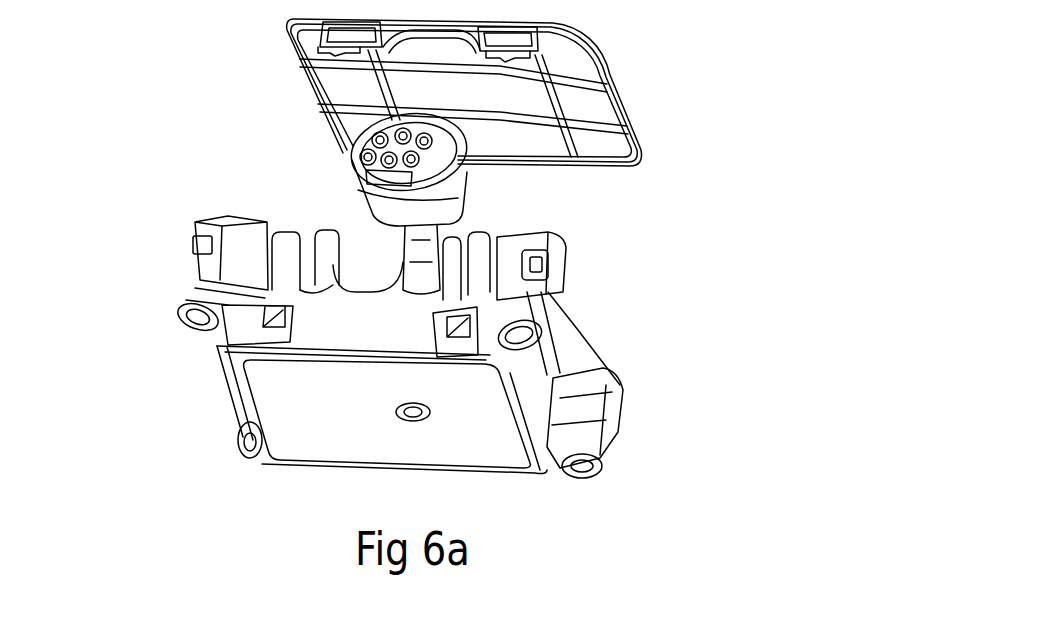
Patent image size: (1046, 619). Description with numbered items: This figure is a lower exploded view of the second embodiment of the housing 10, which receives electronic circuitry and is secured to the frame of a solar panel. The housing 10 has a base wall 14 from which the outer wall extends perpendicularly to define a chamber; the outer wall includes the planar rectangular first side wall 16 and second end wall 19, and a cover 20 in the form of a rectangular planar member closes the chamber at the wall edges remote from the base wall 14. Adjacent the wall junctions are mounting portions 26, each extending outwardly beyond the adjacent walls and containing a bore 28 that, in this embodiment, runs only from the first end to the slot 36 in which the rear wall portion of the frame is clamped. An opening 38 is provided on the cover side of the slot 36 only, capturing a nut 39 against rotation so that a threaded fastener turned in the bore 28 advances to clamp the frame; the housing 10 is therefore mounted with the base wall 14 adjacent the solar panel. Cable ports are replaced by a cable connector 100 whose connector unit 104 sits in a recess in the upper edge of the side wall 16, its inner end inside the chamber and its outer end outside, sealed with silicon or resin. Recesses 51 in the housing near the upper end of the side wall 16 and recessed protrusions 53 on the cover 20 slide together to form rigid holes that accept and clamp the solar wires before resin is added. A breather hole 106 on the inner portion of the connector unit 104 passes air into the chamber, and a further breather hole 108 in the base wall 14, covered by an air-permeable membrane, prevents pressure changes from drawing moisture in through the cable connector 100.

The housing 10 is at (665, 503).
The base wall 14 is at (493, 455).
The first side wall 16 is at (250, 462).
The second end wall 19 is at (551, 350).
The cover 20 is at (578, 101).
The mounting portion 26 is at (203, 230).
The bore 28 is at (193, 323).
The slot 36 is at (208, 273).
The opening 38 is at (200, 252).
The nut 39 is at (560, 277).
The recess 51 is at (298, 243).
The recessed protrusion 53 is at (520, 60).
The cable connector 100 is at (352, 160).
The connector unit 104 is at (357, 187).
The breather hole 106 is at (405, 208).
The further breather hole 108 is at (405, 415).